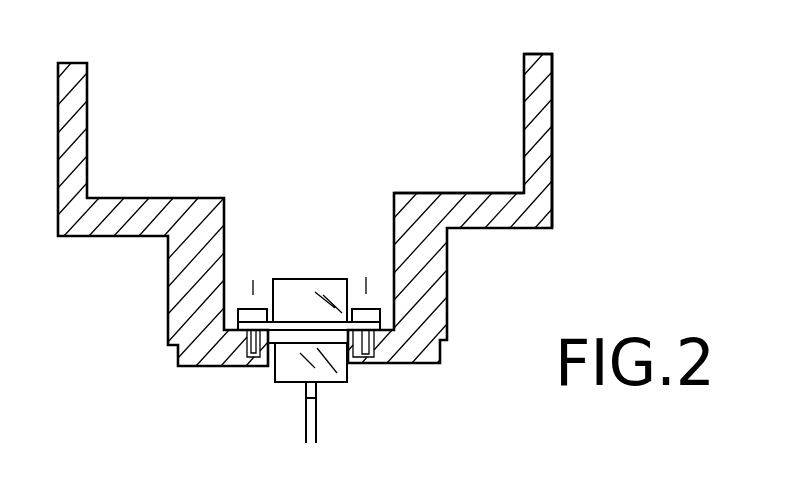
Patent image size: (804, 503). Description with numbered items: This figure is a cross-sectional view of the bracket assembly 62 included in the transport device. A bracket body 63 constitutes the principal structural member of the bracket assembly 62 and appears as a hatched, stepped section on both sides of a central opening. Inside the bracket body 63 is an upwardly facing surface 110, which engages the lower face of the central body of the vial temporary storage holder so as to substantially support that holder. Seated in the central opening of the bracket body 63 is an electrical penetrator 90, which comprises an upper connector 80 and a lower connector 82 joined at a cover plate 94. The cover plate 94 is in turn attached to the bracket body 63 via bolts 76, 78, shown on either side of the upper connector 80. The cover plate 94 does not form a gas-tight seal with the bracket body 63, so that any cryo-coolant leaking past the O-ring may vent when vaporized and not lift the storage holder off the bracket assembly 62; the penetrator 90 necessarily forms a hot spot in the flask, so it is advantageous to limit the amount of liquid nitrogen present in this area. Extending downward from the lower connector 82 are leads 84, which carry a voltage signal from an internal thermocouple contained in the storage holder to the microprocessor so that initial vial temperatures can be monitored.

The bracket assembly 62 is at (248, 118).
The bracket body 63 is at (553, 147).
The upwardly facing surface 110 is at (480, 192).
The electrical penetrator 90 is at (355, 233).
The upper connector 80 is at (281, 283).
The cover plate 94 is at (317, 285).
The bolt 76 is at (253, 307).
The bolt 78 is at (360, 308).
The lower connector 82 is at (285, 387).
The leads 84 is at (317, 418).